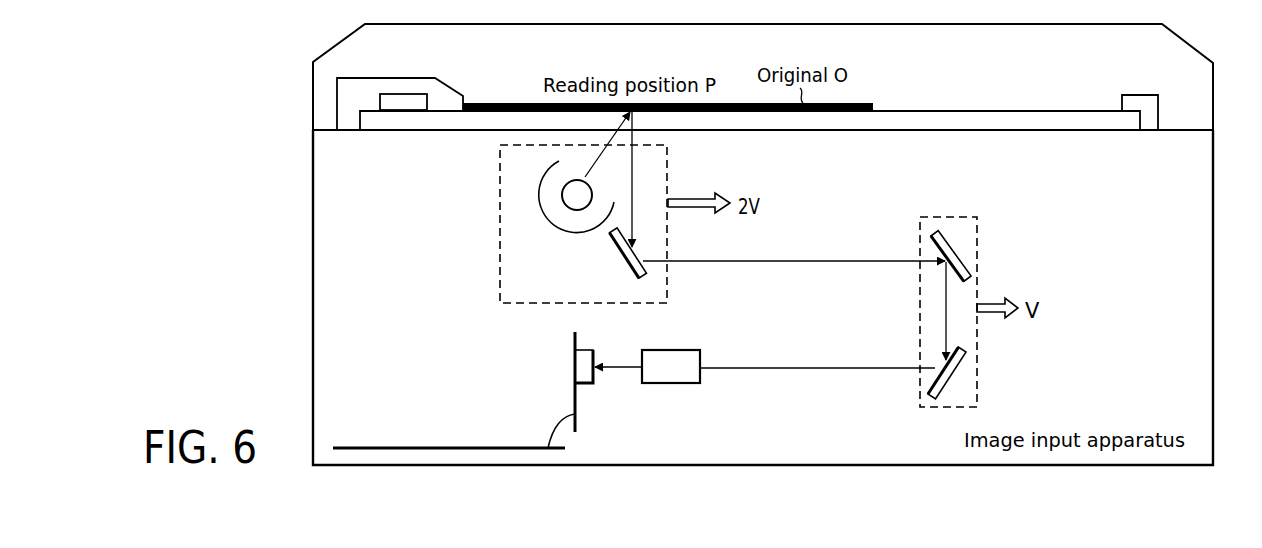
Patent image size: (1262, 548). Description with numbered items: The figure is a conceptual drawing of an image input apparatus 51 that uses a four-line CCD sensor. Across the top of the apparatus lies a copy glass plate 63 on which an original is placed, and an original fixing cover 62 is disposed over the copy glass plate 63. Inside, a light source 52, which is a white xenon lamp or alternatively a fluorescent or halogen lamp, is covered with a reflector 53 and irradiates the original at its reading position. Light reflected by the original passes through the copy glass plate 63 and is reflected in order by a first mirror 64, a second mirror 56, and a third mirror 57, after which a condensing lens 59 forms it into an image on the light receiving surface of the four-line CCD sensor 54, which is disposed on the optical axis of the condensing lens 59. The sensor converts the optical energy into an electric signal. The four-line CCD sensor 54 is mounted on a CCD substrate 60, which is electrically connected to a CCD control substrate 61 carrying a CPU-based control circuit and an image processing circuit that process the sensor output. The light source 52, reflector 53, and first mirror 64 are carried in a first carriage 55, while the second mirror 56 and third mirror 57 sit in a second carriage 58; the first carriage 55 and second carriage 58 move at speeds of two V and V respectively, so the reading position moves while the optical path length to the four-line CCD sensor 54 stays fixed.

The image input apparatus 51 is at (313, 222).
The light source 52 is at (562, 193).
The reflector 53 is at (541, 221).
The 4-line CCD sensor 54 is at (594, 353).
The first carriage 55 is at (500, 269).
The second mirror 56 is at (968, 250).
The third mirror 57 is at (962, 372).
The second carriage 58 is at (946, 215).
The condensing lens 59 is at (700, 358).
The CCD substrate 60 is at (577, 403).
The CCD control substrate 61 is at (516, 446).
The original fixing cover 62 is at (1213, 80).
The copy glass plate 63 is at (1071, 110).
The first mirror 64 is at (615, 252).